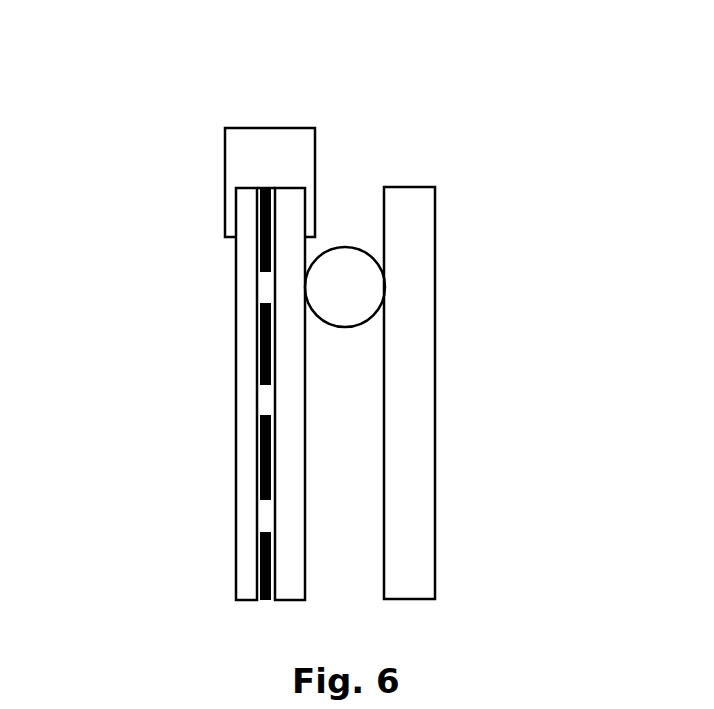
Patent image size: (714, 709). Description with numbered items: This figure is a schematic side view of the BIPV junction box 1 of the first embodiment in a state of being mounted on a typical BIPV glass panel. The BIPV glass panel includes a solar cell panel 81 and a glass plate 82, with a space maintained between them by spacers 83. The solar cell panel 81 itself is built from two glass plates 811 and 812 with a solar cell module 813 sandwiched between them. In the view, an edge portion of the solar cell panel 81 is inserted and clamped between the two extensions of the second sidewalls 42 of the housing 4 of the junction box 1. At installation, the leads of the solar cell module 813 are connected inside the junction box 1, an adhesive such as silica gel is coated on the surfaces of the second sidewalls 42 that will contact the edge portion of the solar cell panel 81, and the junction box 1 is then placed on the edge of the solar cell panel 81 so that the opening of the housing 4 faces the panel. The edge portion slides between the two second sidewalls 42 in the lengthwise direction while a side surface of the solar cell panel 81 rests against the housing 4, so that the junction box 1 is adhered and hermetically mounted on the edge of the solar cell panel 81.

The BIPV junction box 1 is at (213, 88).
The housing 4 is at (235, 150).
The second sidewalls 42 is at (225, 200).
The solar cell panel 81 is at (212, 280).
The glass plate 811 is at (242, 333).
The glass plate 812 is at (287, 558).
The solar cell module 813 is at (260, 443).
The glass plate 82 is at (425, 393).
The spacers 83 is at (357, 257).